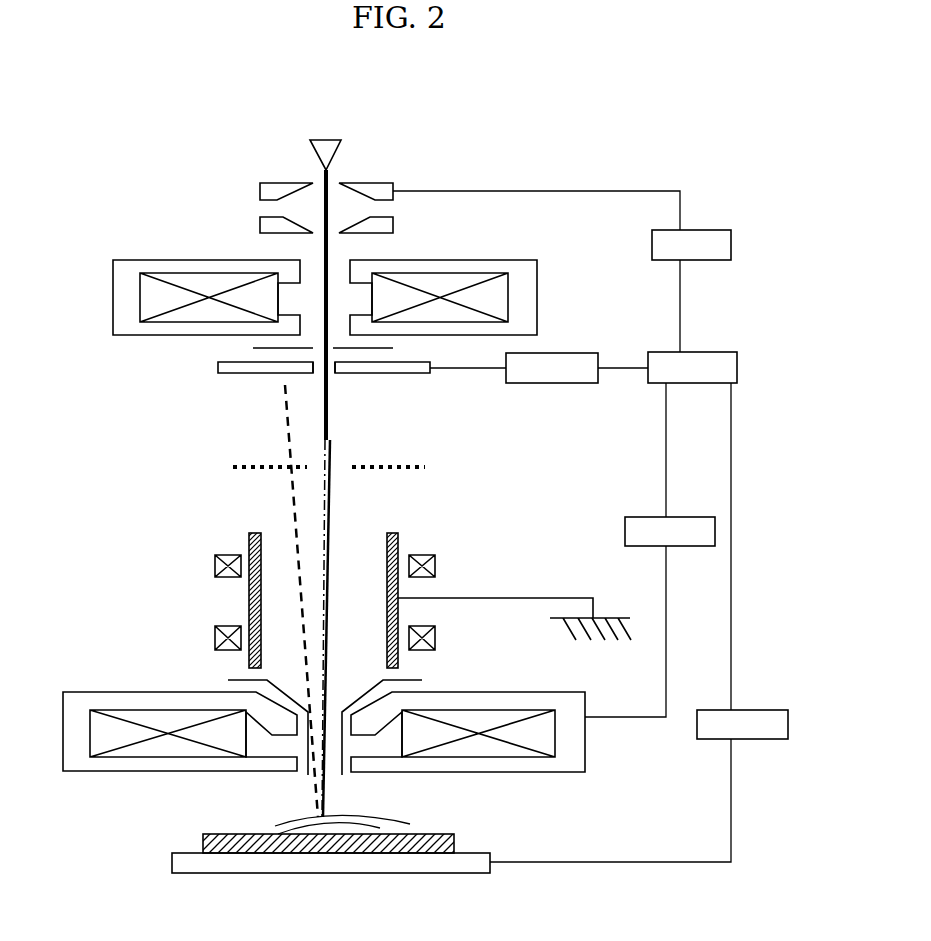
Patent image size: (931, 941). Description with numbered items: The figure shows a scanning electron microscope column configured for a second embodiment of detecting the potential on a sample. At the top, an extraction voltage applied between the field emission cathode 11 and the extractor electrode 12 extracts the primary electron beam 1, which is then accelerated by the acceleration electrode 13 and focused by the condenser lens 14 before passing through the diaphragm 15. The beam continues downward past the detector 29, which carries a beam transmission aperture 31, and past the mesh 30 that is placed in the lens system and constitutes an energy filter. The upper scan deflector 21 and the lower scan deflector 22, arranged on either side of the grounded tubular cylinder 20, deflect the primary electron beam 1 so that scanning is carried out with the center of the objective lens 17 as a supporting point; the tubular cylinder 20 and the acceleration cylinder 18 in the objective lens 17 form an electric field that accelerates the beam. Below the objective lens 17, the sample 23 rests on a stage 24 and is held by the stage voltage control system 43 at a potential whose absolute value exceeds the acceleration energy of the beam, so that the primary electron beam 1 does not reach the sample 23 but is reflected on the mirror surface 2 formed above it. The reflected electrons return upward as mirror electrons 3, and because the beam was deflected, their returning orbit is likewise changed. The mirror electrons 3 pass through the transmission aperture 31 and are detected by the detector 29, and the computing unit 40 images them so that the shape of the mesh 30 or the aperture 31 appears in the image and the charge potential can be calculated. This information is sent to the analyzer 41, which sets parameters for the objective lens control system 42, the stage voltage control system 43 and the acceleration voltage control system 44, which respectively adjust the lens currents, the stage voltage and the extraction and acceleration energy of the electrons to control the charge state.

The primary electron beam 1 is at (328, 432).
The mirror surface 2 is at (280, 826).
The mirror electrons 3 is at (292, 508).
The field emission cathode 11 is at (316, 138).
The extractor electrode 12 is at (260, 185).
The acceleration electrode 13 is at (260, 222).
The condenser lens 14 is at (113, 300).
The diaphragm 15 is at (393, 348).
The objective lens 17 is at (62, 691).
The acceleration cylinder 18 is at (410, 680).
The tubular cylinder 20 is at (249, 593).
The upper scan deflector 21 is at (215, 567).
The lower scan deflector 22 is at (215, 640).
The sample 23 is at (203, 838).
The stage 24 is at (172, 862).
The detector 29 is at (218, 368).
The mesh 30 is at (237, 467).
The beam transmission aperture 31 is at (320, 374).
The computing unit 40 is at (552, 385).
The analyzer 41 is at (648, 385).
The objective lens control system 42 is at (625, 530).
The stage voltage control system 43 is at (707, 740).
The acceleration voltage control system 44 is at (653, 242).